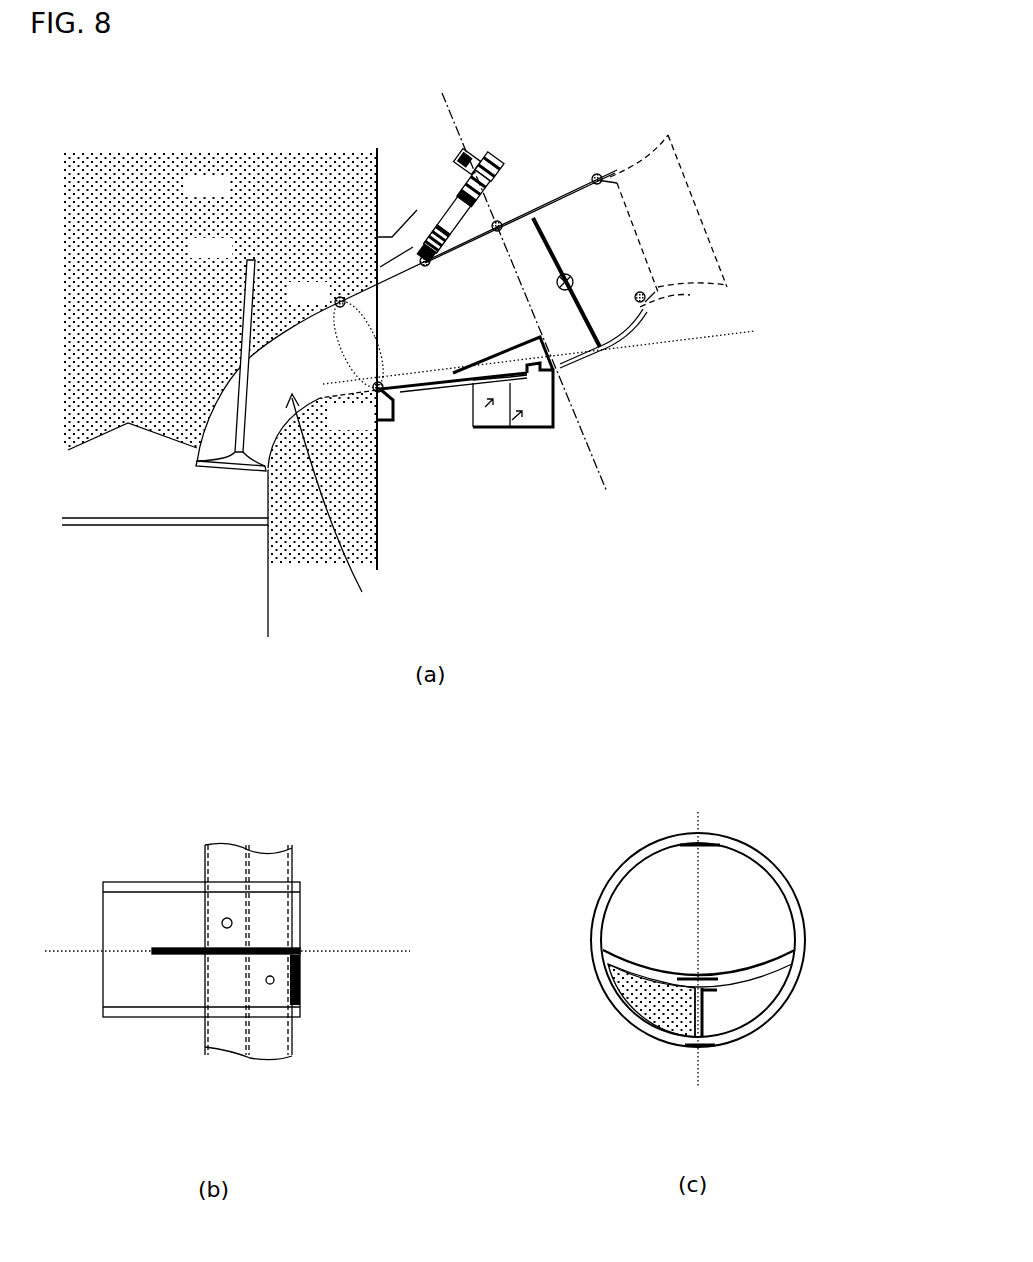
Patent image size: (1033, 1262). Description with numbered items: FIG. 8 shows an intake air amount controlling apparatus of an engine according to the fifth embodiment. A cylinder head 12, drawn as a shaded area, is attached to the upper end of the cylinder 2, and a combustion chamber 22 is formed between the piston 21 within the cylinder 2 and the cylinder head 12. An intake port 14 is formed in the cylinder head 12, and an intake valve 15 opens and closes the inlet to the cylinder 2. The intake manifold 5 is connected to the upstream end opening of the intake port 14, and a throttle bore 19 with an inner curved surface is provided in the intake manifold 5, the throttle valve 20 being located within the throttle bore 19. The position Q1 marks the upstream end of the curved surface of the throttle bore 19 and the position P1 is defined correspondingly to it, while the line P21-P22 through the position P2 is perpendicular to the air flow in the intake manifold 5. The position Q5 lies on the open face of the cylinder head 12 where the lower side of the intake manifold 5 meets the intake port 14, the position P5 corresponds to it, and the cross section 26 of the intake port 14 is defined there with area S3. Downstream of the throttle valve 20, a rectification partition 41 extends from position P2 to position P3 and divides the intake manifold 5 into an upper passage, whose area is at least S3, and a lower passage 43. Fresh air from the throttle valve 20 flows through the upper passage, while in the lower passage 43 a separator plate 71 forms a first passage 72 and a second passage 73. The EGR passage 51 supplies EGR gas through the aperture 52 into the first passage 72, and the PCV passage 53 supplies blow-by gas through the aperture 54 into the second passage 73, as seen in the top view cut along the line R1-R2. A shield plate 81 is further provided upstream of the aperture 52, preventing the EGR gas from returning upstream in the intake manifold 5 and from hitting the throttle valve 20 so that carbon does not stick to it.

The cylinder 2 is at (270, 598).
The intake manifold 5 is at (410, 395).
The cylinder head 12 is at (219, 359).
The intake port 14 is at (337, 505).
The intake valve 15 is at (243, 303).
The throttle bore 19 is at (627, 347).
The throttle valve 20 is at (583, 290).
The piston 21 is at (198, 553).
The combustion chamber 22 is at (165, 498).
The cross section of the intake port 26 is at (333, 323).
The rectification partition 41 is at (500, 356).
The lower passage 43 is at (553, 427).
The EGR passage 51 is at (518, 415).
The aperture 52 is at (273, 988).
The PCV passage 53 is at (492, 400).
The aperture 54 is at (222, 918).
The separator plate 71 is at (250, 947).
The first passage 72 is at (134, 984).
The second passage 73 is at (201, 949).
The shield plate 81 is at (573, 347).
The position P1 is at (588, 169).
The position P2 is at (512, 234).
The position P3 is at (436, 270).
The position P5 is at (318, 294).
The line endpoint P21 is at (570, 572).
The line endpoint P22 is at (667, 808).
The position Q1 is at (661, 310).
The position Q5 is at (348, 409).
The line endpoint R1 is at (602, 641).
The line endpoint R2 is at (383, 646).